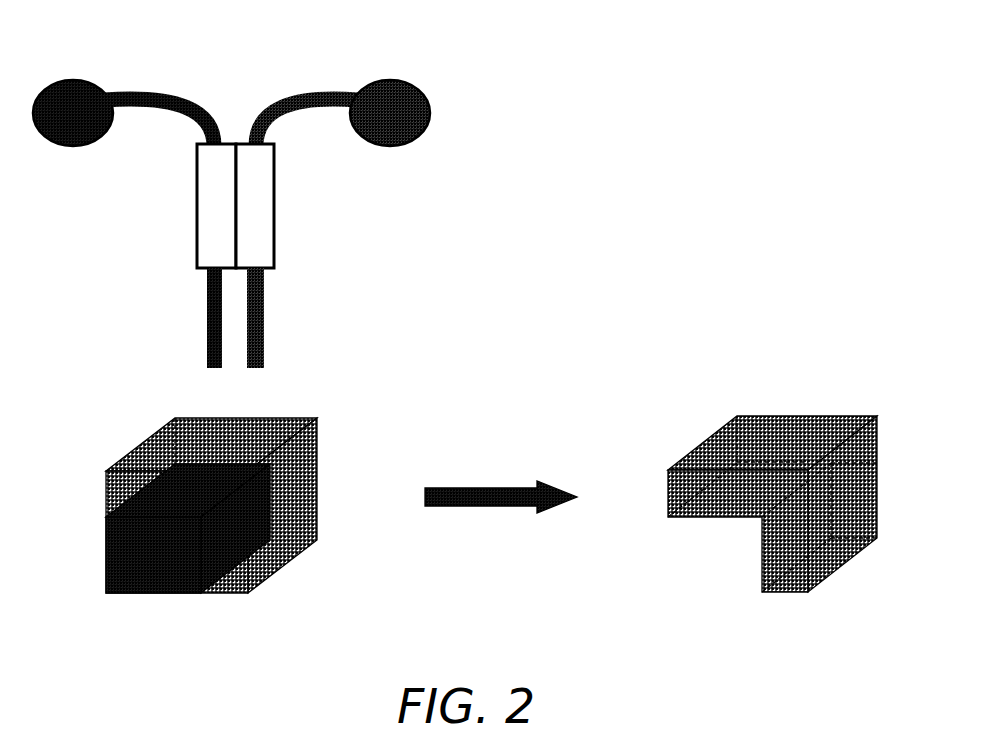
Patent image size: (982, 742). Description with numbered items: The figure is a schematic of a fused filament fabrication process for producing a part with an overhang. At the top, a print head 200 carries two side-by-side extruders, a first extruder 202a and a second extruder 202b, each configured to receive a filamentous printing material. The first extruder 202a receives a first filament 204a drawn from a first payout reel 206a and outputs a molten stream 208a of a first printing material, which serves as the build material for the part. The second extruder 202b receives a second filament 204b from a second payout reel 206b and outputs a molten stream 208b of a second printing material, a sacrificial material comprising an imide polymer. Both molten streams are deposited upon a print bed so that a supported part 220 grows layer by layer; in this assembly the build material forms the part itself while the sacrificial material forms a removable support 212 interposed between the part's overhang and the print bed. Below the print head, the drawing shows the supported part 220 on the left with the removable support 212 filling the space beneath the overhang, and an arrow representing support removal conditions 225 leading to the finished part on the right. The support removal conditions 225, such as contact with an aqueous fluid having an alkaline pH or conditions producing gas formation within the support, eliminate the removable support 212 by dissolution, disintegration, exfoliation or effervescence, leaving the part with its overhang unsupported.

The print head 200 is at (249, 189).
The first extruder 202a is at (275, 230).
The second extruder 202b is at (197, 240).
The first filament 204a is at (305, 90).
The second filament 204b is at (155, 88).
The first payout reel 206a is at (405, 80).
The second payout reel 206b is at (65, 80).
The molten stream of first printing material 208a is at (265, 320).
The molten stream of second printing material 208b is at (207, 320).
The removable support 212 is at (163, 595).
The supported part 220 is at (230, 521).
The support removal conditions 225 is at (494, 488).